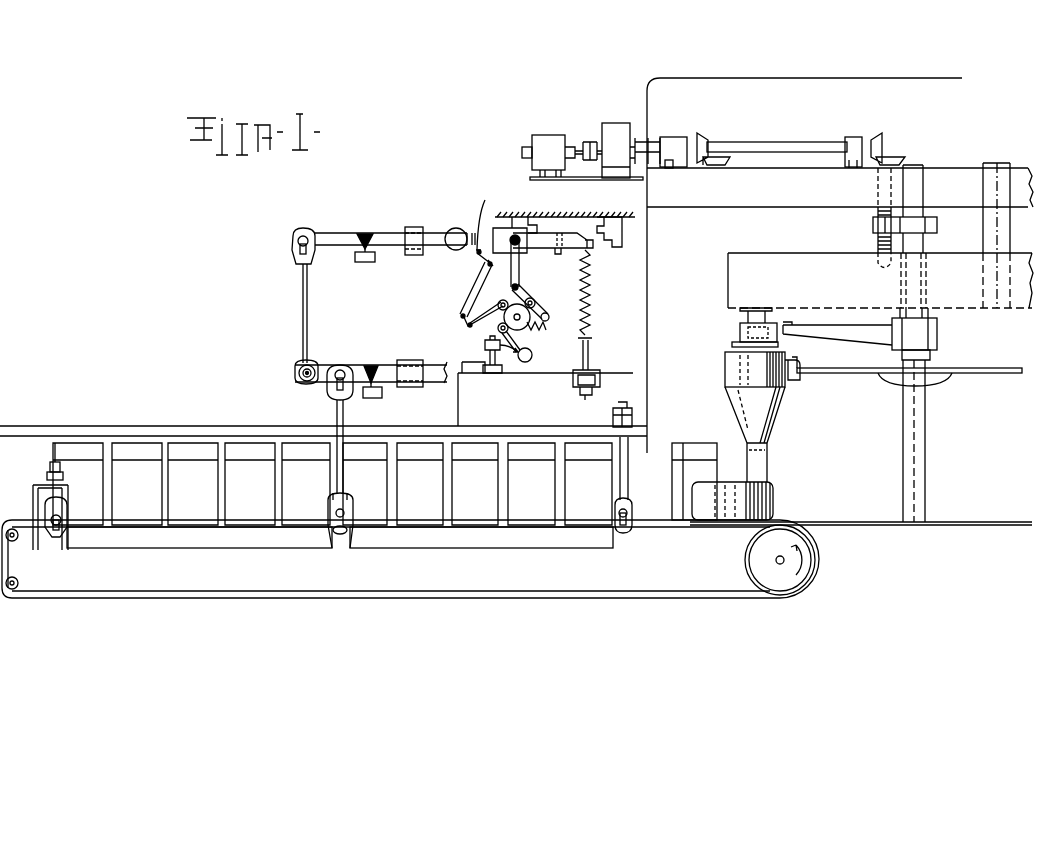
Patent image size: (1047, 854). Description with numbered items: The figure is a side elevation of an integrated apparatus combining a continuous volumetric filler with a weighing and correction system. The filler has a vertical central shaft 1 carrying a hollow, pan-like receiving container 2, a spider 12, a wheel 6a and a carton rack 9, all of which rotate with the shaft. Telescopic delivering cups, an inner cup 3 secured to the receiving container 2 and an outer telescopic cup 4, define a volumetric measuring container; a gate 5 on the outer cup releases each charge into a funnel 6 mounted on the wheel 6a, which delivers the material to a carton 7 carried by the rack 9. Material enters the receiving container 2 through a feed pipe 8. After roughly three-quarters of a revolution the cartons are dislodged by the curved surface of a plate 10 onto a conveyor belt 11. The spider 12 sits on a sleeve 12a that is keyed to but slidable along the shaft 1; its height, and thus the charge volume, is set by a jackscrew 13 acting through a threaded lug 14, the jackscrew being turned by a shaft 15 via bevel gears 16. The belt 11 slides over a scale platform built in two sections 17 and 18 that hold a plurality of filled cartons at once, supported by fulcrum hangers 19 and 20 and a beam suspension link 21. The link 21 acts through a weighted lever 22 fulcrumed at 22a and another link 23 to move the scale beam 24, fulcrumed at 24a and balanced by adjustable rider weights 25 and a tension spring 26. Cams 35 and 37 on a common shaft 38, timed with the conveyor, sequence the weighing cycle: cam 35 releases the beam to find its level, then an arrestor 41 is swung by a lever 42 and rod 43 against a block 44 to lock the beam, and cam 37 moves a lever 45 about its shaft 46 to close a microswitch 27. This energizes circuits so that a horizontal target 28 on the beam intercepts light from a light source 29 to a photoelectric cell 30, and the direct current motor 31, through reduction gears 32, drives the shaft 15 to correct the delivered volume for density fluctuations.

The vertical central shaft 1 is at (925, 467).
The receiving container 2 is at (728, 265).
The inner cup 3 is at (740, 313).
The outer telescopic cup 4 is at (740, 332).
The gate 5 is at (733, 345).
The funnel 6 is at (740, 398).
The wheel 6a is at (828, 373).
The carton 7 is at (768, 457).
The feed pipe 8 is at (1010, 230).
The carton rack 9 is at (868, 525).
The plate 10 is at (773, 492).
The conveyor belt 11 is at (692, 530).
The spider 12 is at (870, 340).
The sleeve 12a is at (937, 238).
The jackscrew 13 is at (876, 215).
The threaded lug 14 is at (873, 236).
The shaft 15 is at (790, 142).
The bevel gears 16 is at (882, 140).
The platform section 17 is at (218, 546).
The platform section 18 is at (458, 546).
The fulcrum hanger 19 is at (68, 540).
The fulcrum hanger 20 is at (632, 535).
The beam suspension link 21 is at (338, 410).
The weighted lever 22 is at (295, 372).
The fulcrum 22a is at (382, 395).
The link 23 is at (303, 305).
The scale beam 24 is at (335, 233).
The fulcrum 24a is at (367, 262).
The adjustable rider weights 25 is at (417, 227).
The tension spring 26 is at (590, 300).
The microswitch 27 is at (495, 375).
The horizontal target 28 is at (570, 238).
The light source 29 is at (523, 220).
The photoelectric cell 30 is at (617, 240).
The direct current motor 31 is at (546, 140).
The reduction gears 32 is at (616, 123).
The cam 35 is at (530, 312).
The cam 37 is at (522, 290).
The common shaft 38 is at (520, 262).
The arrestor 41 is at (477, 257).
The lever 42 is at (478, 326).
The rod 43 is at (480, 285).
The block 44 is at (485, 216).
The lever 45 is at (510, 360).
The shaft 46 is at (533, 355).